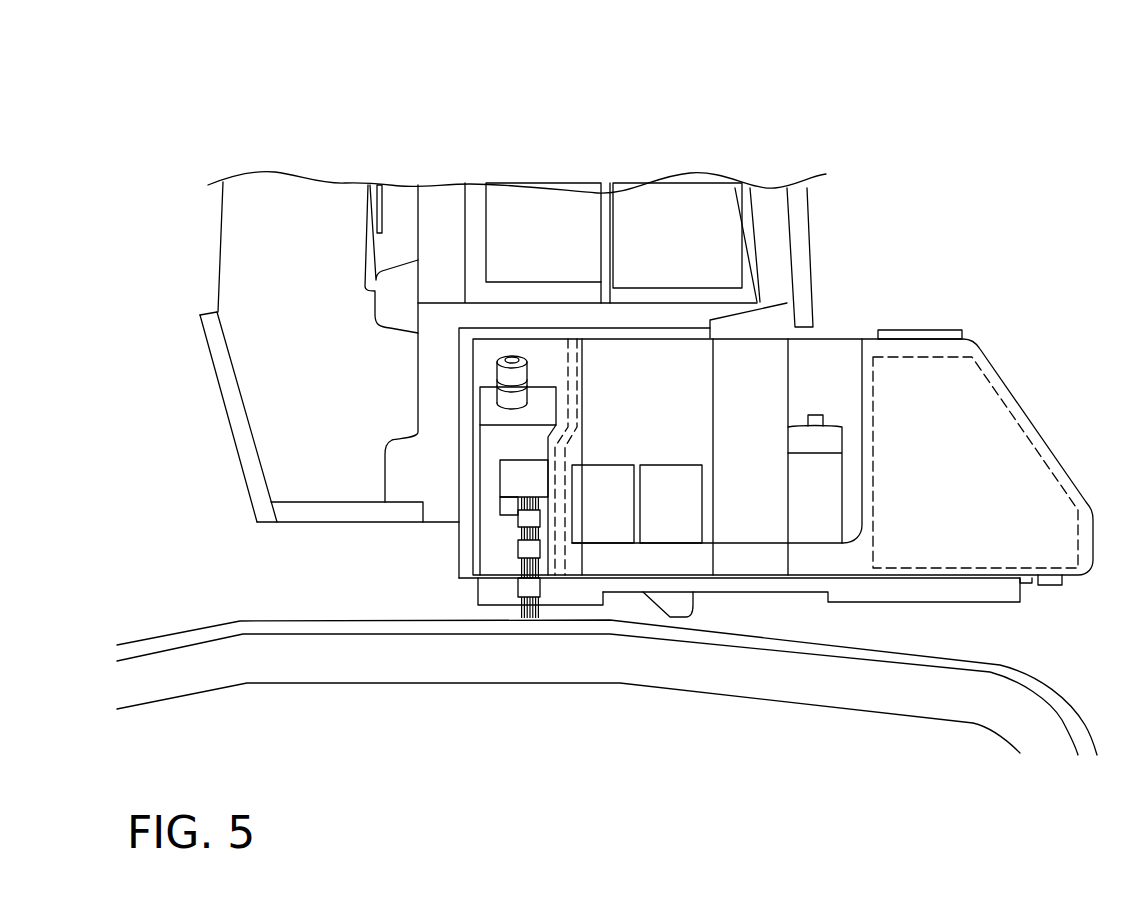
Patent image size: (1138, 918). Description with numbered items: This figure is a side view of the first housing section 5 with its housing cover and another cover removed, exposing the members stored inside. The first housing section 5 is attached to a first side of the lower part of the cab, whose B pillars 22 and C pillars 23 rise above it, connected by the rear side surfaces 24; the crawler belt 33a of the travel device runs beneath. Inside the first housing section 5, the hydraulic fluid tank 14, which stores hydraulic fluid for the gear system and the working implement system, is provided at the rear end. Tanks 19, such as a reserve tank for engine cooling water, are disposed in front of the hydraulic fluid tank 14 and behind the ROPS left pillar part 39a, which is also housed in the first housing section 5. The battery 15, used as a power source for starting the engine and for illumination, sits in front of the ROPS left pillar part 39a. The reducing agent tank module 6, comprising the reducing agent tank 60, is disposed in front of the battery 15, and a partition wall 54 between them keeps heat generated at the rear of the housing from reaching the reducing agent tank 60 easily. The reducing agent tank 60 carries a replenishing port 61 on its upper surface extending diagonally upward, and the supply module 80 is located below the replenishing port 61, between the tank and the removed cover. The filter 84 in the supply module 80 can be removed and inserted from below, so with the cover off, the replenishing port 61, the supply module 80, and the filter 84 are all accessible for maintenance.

The first housing section 5 is at (1003, 380).
The reducing agent tank module 6 is at (495, 583).
The hydraulic fluid tank 14 is at (1027, 430).
The battery 15 is at (618, 537).
The tanks 19 is at (810, 528).
The B pillars 22 is at (442, 207).
The C pillars 23 is at (797, 248).
The rear side surfaces 24 is at (677, 222).
The crawler belt 33a is at (925, 660).
The ROPS left pillar part 39a is at (747, 522).
The partition wall 54 is at (565, 560).
The reducing agent tank 60 is at (498, 533).
The replenishing port 61 is at (517, 380).
The supply module 80 is at (533, 480).
The filter 84 is at (528, 620).